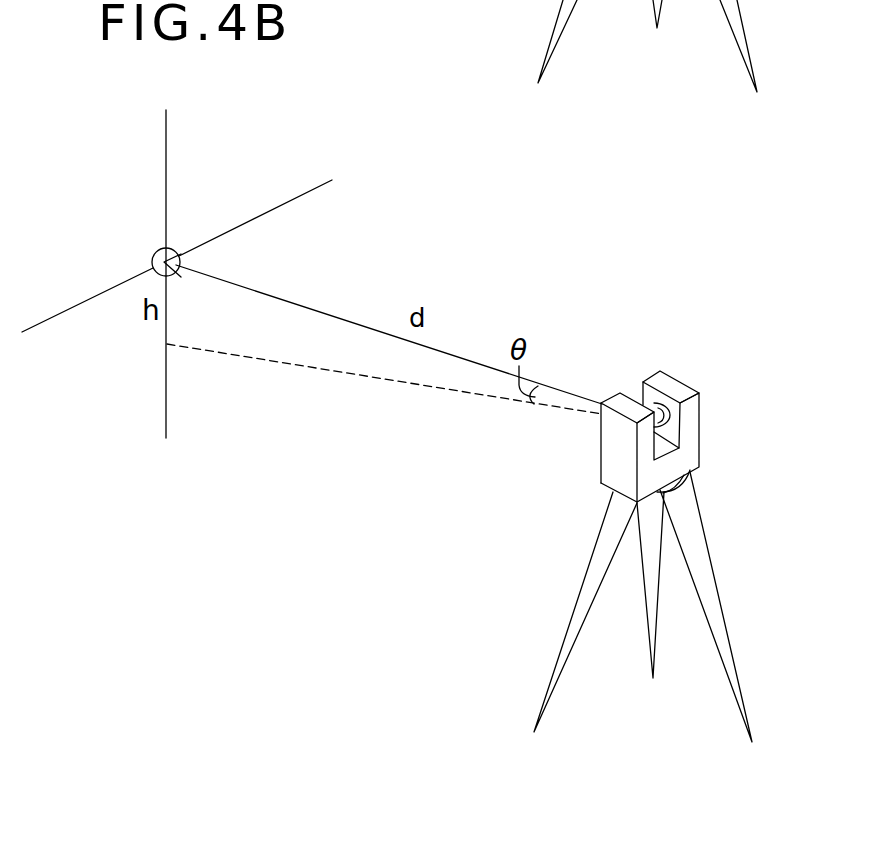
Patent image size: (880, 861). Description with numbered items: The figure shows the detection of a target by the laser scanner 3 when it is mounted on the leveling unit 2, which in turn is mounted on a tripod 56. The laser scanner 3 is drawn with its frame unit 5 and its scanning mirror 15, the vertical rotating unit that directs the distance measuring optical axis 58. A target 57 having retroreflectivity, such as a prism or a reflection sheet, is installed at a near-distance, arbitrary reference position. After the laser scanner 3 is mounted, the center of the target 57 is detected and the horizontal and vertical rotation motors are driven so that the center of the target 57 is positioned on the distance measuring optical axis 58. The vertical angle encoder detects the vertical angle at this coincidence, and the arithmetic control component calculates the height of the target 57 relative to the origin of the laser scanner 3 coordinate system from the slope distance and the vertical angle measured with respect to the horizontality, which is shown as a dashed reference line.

The leveling unit 2 is at (663, 492).
The laser scanner 3 is at (651, 406).
The frame unit 5 is at (602, 447).
The scanning mirror 15 is at (652, 405).
The tripod 56 is at (712, 556).
The target 57 is at (177, 243).
The distance measuring optical axis 58 is at (340, 313).